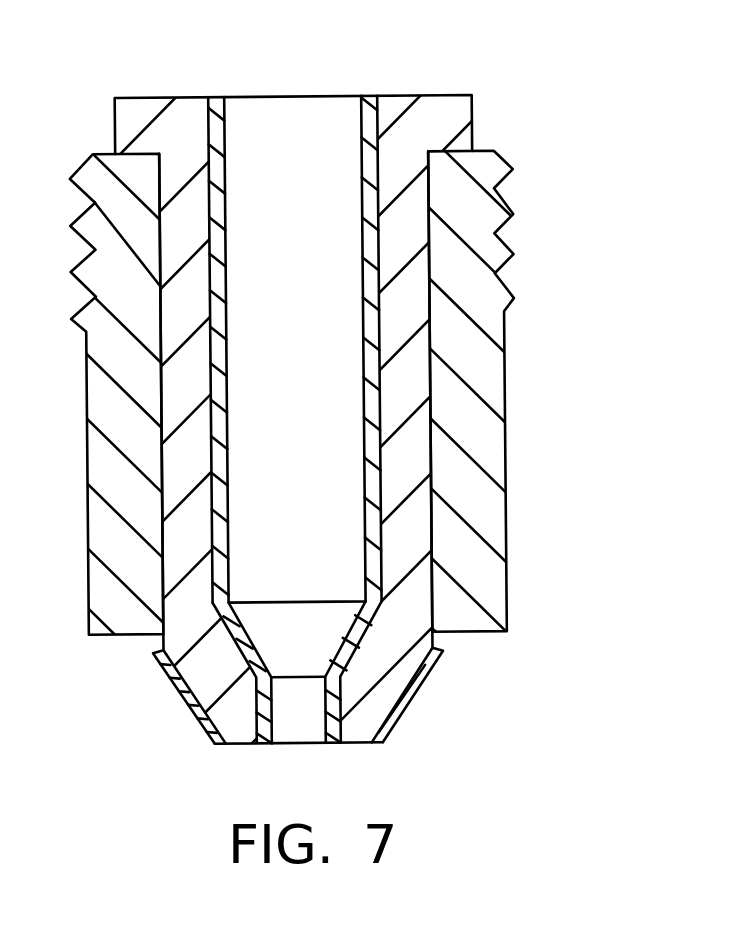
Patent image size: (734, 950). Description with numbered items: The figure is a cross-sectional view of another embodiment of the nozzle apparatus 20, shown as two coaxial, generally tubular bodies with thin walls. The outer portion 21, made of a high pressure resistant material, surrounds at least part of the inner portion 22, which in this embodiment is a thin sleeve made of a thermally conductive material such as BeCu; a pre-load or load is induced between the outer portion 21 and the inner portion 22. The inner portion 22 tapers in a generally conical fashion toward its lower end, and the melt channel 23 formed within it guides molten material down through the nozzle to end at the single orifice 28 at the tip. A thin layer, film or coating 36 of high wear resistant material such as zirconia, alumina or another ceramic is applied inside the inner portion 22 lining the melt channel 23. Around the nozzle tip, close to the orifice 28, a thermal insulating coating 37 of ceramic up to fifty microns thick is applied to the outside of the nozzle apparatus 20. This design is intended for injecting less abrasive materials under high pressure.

The nozzle apparatus 20 is at (602, 329).
The outer portion 21 is at (485, 213).
The inner portion 22 is at (412, 453).
The melt channel 23 is at (342, 130).
The orifice 28 is at (308, 728).
The coating 36 is at (213, 102).
The thermal insulating coating 37 is at (197, 715).